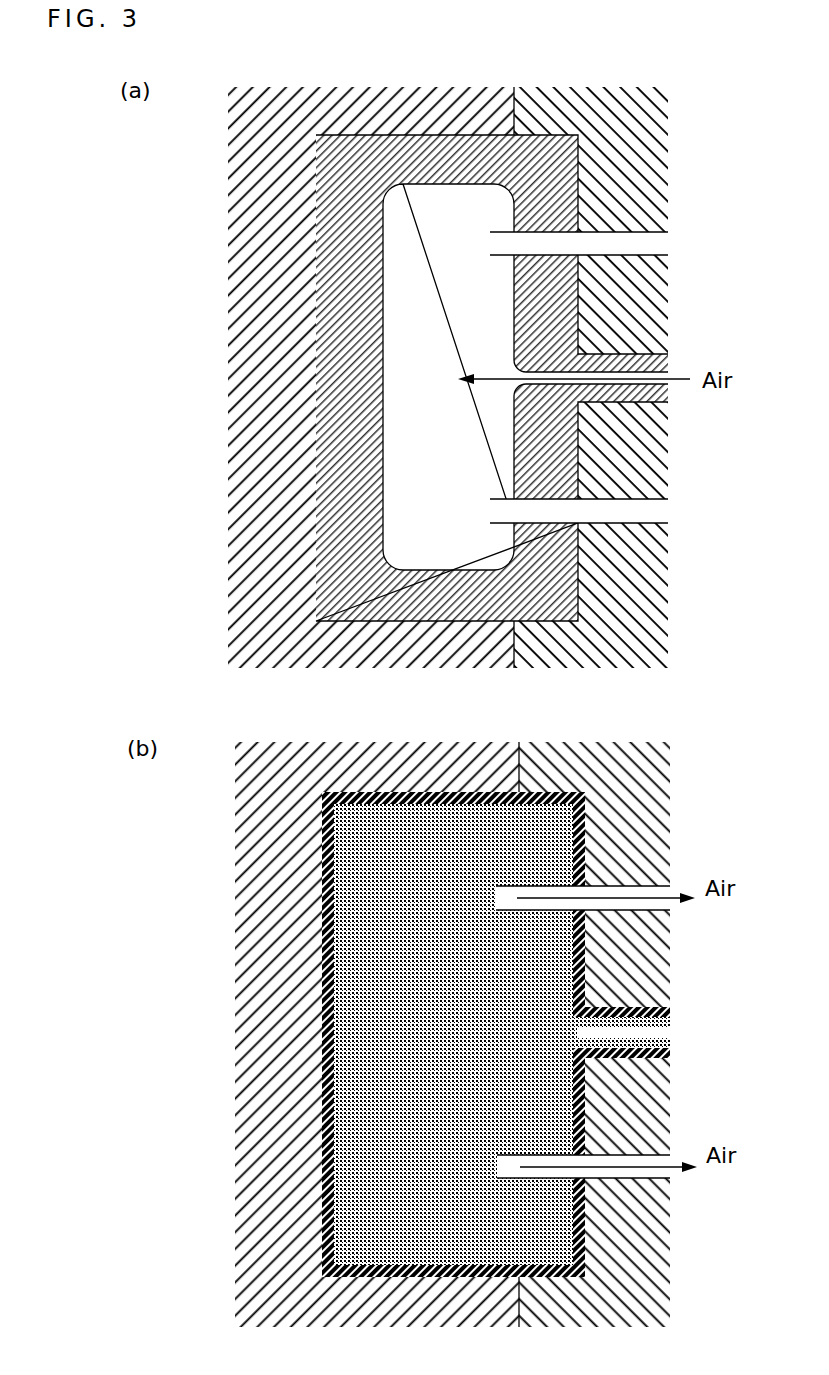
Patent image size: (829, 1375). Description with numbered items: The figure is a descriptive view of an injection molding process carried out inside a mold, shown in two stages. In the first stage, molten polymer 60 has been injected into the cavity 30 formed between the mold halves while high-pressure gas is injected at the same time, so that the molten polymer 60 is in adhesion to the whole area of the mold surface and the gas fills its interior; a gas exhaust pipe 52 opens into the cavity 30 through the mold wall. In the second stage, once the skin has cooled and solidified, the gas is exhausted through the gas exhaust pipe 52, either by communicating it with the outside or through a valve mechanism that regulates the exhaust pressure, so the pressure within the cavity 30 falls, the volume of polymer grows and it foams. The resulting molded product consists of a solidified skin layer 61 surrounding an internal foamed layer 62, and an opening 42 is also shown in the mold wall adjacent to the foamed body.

The cavity 30 is at (459, 342).
The vent 42 is at (650, 1030).
The gas exhaust pipe 52 is at (645, 233).
The molten polymer 60 is at (345, 356).
The skin layer 61 is at (323, 872).
The internal foamed layer 62 is at (393, 997).